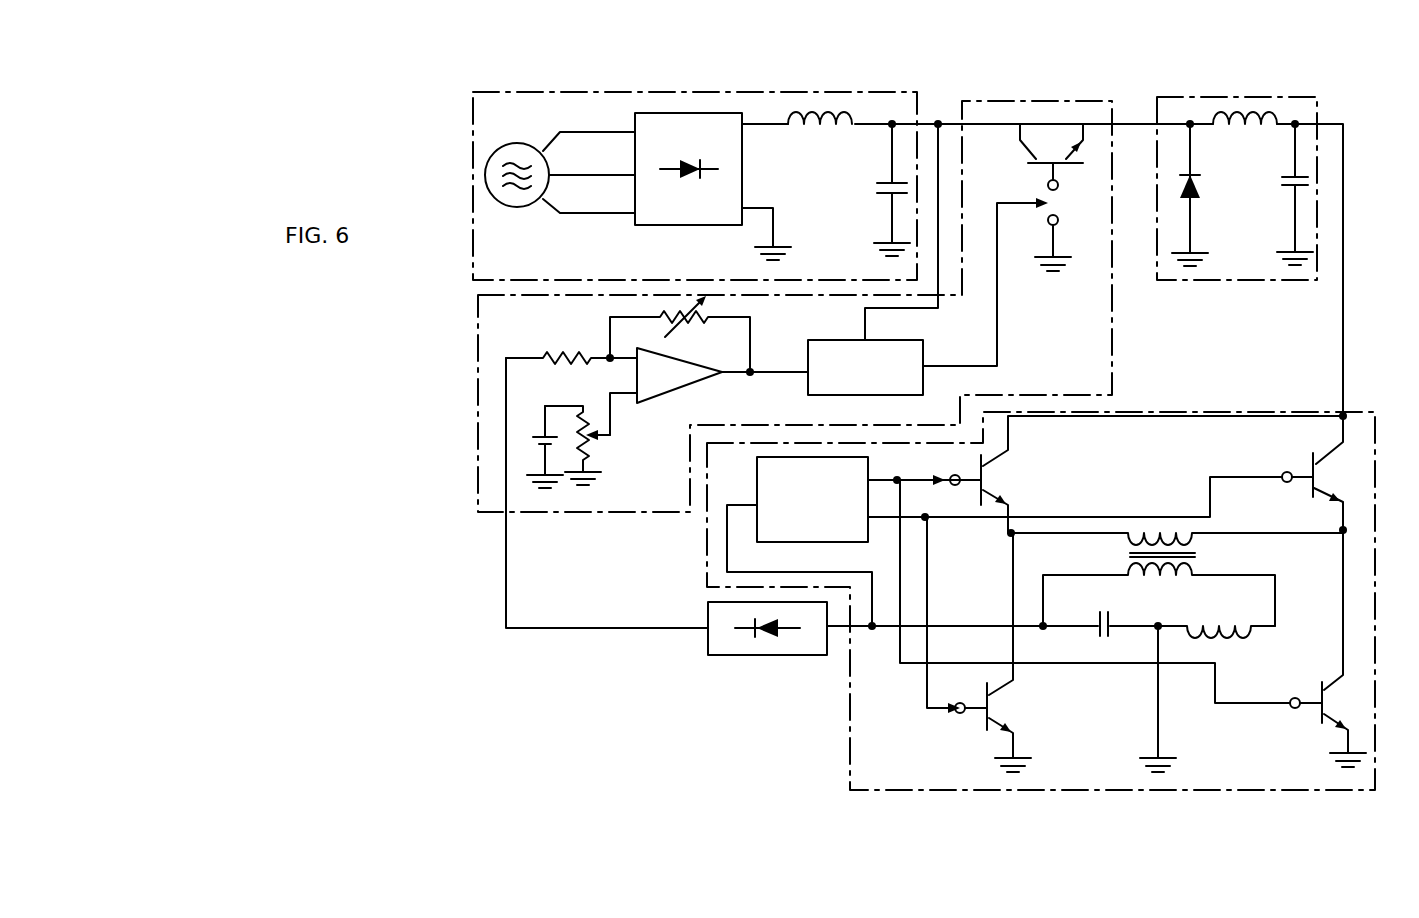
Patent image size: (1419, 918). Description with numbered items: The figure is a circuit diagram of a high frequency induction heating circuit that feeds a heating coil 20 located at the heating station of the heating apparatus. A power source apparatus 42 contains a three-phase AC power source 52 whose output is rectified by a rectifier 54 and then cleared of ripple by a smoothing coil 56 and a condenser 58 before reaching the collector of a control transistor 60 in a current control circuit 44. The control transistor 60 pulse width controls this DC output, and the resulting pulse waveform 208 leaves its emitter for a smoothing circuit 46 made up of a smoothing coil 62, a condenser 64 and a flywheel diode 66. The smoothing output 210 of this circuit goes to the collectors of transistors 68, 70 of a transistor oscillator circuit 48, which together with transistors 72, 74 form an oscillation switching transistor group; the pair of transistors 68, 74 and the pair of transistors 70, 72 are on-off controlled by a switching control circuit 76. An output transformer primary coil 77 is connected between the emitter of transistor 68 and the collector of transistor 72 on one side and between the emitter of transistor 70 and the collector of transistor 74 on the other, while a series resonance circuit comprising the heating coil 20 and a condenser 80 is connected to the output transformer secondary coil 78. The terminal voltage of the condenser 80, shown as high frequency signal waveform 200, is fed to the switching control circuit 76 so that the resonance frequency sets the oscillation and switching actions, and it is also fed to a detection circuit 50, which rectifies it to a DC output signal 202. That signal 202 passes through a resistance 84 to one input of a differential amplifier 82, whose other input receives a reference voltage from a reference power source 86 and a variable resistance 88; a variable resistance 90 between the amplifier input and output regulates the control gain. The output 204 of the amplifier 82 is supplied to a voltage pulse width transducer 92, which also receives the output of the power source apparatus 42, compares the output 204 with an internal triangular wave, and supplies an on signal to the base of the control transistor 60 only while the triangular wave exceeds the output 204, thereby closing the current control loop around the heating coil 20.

The heating coil 20 is at (1236, 636).
The power source apparatus 42 is at (733, 89).
The current control circuit 44 is at (1040, 97).
The smoothing circuit 46 is at (1246, 97).
The transistor oscillator circuit 48 is at (848, 764).
The detection circuit 50 is at (775, 657).
The three-phase AC power source 52 is at (517, 143).
The rectifier 54 is at (742, 183).
The smoothing coil 56 is at (828, 128).
The condenser 58 is at (878, 186).
The control transistor 60 is at (1045, 138).
The smoothing coil 62 is at (1248, 128).
The condenser 64 is at (1284, 182).
The flywheel diode 66 is at (1200, 186).
The transistor 68 is at (993, 488).
The transistor 70 is at (1328, 464).
The transistor 72 is at (1015, 692).
The transistor 74 is at (1316, 712).
The switching control circuit 76 is at (827, 513).
The output transformer primary coil 77 is at (1161, 532).
The output transformer secondary coil 78 is at (1169, 577).
The condenser 80 is at (1100, 630).
The differential amplifier 82 is at (680, 391).
The resistance 84 is at (571, 355).
The reference power source 86 is at (539, 431).
The variable resistance 88 is at (596, 451).
The variable resistance 90 is at (684, 324).
The voltage pulse width transducer 92 is at (879, 378).
The high frequency signal waveform 200 is at (963, 624).
The output signal 202 is at (630, 632).
The output 204 is at (775, 368).
The pulse waveform 208 is at (1132, 118).
The smoothing output 210 is at (1348, 324).